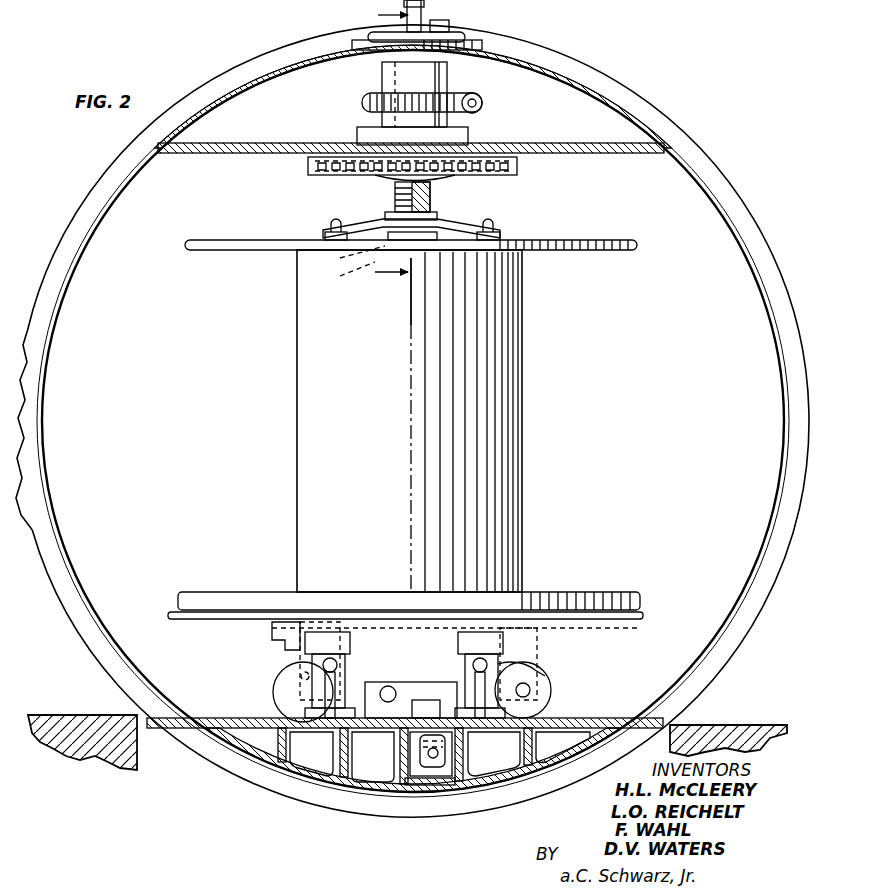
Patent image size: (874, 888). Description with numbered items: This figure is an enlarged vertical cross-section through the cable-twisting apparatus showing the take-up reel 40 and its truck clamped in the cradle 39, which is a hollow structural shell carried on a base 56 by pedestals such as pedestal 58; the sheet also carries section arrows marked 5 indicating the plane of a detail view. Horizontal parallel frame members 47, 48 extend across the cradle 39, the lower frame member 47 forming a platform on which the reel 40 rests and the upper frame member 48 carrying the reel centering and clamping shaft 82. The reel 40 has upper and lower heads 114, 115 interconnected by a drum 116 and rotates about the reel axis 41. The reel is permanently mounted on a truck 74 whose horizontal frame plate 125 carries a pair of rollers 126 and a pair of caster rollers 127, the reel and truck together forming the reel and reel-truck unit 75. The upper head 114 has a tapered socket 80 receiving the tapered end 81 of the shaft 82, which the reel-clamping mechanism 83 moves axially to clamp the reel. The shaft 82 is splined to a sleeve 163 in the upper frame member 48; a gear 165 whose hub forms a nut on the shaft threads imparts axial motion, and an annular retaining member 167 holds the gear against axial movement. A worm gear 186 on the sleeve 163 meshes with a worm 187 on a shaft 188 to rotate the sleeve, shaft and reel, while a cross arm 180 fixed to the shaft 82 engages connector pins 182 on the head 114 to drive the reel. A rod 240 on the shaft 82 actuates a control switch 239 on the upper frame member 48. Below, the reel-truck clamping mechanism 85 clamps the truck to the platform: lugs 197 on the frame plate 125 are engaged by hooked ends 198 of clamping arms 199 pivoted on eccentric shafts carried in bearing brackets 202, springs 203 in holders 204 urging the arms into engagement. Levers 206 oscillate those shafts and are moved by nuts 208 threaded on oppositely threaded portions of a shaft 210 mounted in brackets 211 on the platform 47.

The section line 5- 5 is at (384, 165).
The cradle 39 is at (713, 150).
The take-up reel 40 is at (256, 360).
The reel axis 41 is at (406, 448).
The lower frame member 47 is at (588, 718).
The upper frame member 48 is at (628, 156).
The base 56 is at (58, 715).
The pedestal 58 is at (594, 8).
The truck 74 is at (275, 641).
The reel and reel-truck unit 75 is at (550, 641).
The tapered socket 80 is at (351, 257).
The tapered end 81 is at (346, 274).
The reel centering and clamping shaft 82 is at (395, 197).
The reel-clamping mechanism 83 is at (368, 180).
The reel-truck clamping mechanism 85 is at (304, 664).
The upper head 114 is at (216, 240).
The lower head 115 is at (190, 619).
The drum 116 is at (523, 504).
The horizontal frame plate 125 is at (272, 629).
The rollers 126 is at (284, 690).
The caster rollers 127 is at (550, 694).
The sleeve 163 is at (386, 78).
The gear 165 is at (455, 140).
The annular retaining member 167 is at (518, 175).
The cross arm 180 is at (452, 226).
The connector pins 182 is at (333, 226).
The worm gear 186 is at (364, 101).
The worm 187 is at (483, 109).
The shaft 188 is at (481, 100).
The lugs 197 is at (350, 652).
The hooked ends 198 is at (343, 632).
The clamping arms 199 is at (347, 672).
The bearing brackets 202 is at (340, 722).
The springs 203 is at (536, 658).
The holders 204 is at (546, 673).
The levers 206 is at (373, 757).
The nuts 208 is at (444, 768).
The shaft 210 is at (430, 778).
The brackets 211 is at (424, 745).
The control switch 239 is at (450, 26).
The rod 240 is at (424, 18).